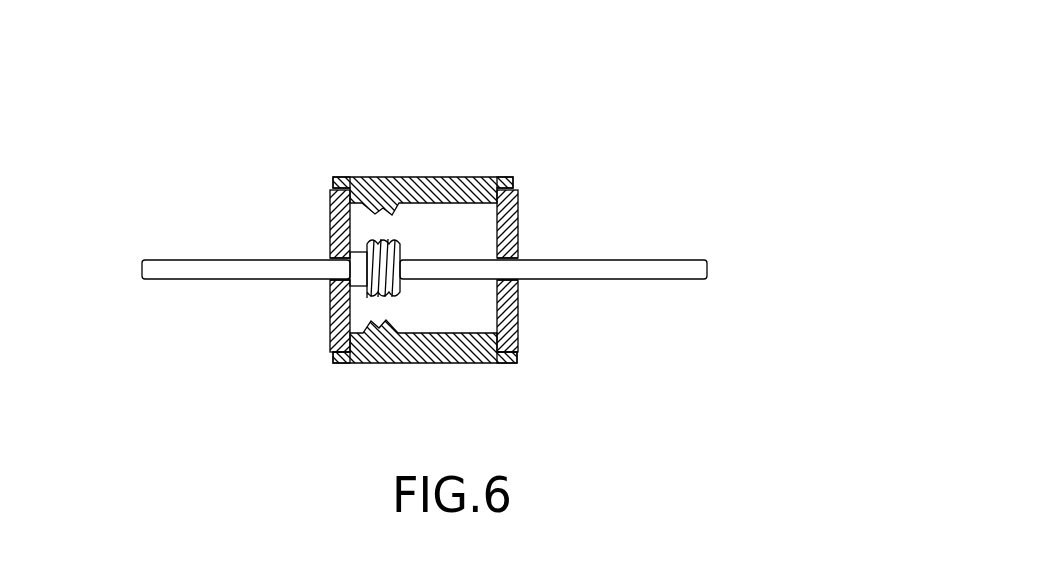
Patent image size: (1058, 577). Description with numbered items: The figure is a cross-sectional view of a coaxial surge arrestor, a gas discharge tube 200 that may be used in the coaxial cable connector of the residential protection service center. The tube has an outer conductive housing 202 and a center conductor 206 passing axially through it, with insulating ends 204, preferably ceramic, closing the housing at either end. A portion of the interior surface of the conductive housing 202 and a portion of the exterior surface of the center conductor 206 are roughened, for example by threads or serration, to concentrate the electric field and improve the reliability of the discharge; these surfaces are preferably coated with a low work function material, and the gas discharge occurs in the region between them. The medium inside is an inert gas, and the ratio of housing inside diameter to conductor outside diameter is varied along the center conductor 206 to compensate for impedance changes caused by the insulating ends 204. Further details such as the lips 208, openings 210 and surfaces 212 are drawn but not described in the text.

The gas discharge tube 200 is at (522, 130).
The conductive housing 202 is at (373, 178).
The insulating ends 204 is at (515, 223).
The center conductor 206 is at (162, 260).
The retaining lip 208 is at (330, 178).
The shaft opening 210 is at (328, 280).
The bearing surface 212 is at (328, 250).